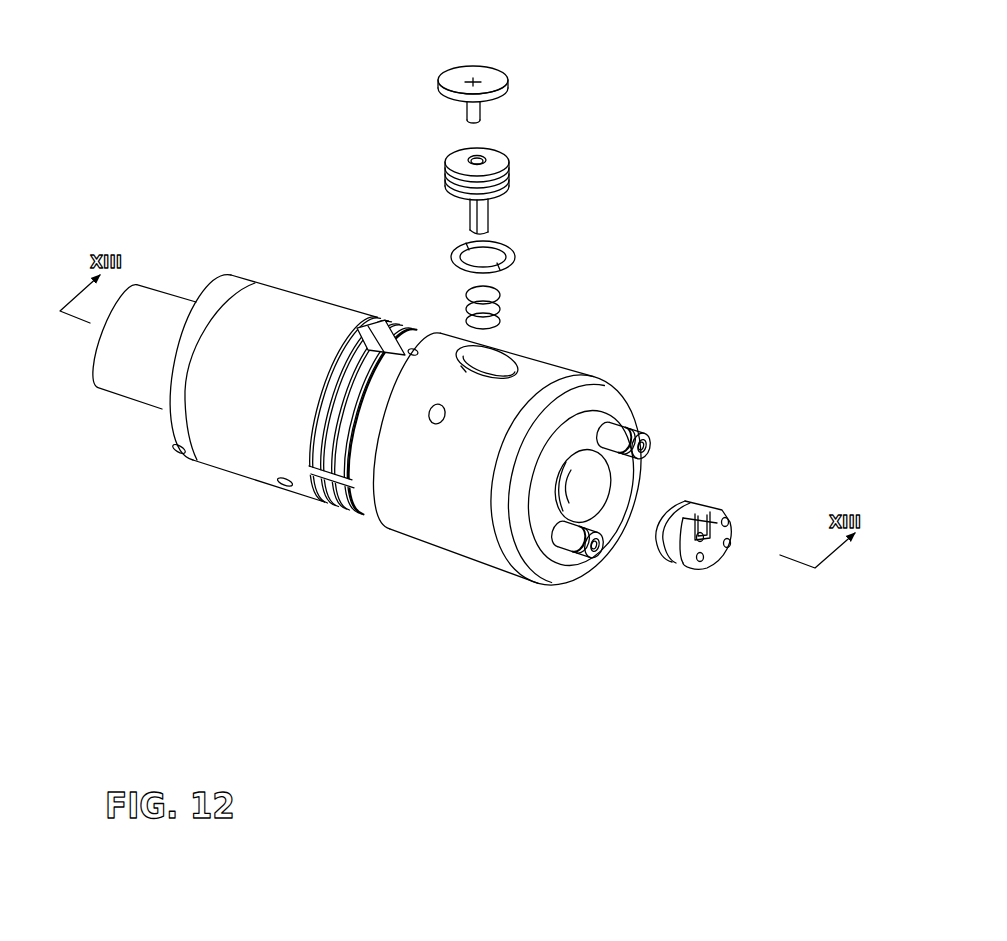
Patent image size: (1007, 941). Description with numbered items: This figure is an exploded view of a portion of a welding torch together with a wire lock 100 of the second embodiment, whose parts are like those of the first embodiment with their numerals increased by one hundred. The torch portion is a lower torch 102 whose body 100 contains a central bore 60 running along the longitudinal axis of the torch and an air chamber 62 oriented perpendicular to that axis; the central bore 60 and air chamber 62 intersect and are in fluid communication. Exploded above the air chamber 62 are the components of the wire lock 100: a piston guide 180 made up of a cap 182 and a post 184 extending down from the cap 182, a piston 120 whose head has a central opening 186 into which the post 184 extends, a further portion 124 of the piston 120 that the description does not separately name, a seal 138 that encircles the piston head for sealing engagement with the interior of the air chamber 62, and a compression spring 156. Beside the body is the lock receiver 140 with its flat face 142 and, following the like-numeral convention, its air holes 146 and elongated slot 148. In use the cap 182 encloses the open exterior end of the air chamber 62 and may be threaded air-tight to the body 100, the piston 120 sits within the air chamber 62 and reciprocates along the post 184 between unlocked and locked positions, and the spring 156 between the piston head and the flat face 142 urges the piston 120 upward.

The central bore 60 is at (588, 498).
The air chamber 62 is at (494, 364).
The wire lock 100 is at (448, 552).
The lower torch 102 is at (253, 488).
The piston 120 is at (476, 186).
The plug stem 124 is at (485, 214).
The seal 138 is at (516, 256).
The lock receiver 140 is at (663, 561).
The flat face 142 is at (703, 503).
The air holes 146 is at (721, 520).
The elongated slot 148 is at (717, 563).
The compression spring 156 is at (501, 297).
The piston guide 180 is at (480, 78).
The cap 182 is at (452, 81).
The post 184 is at (482, 112).
The central opening 186 is at (469, 160).